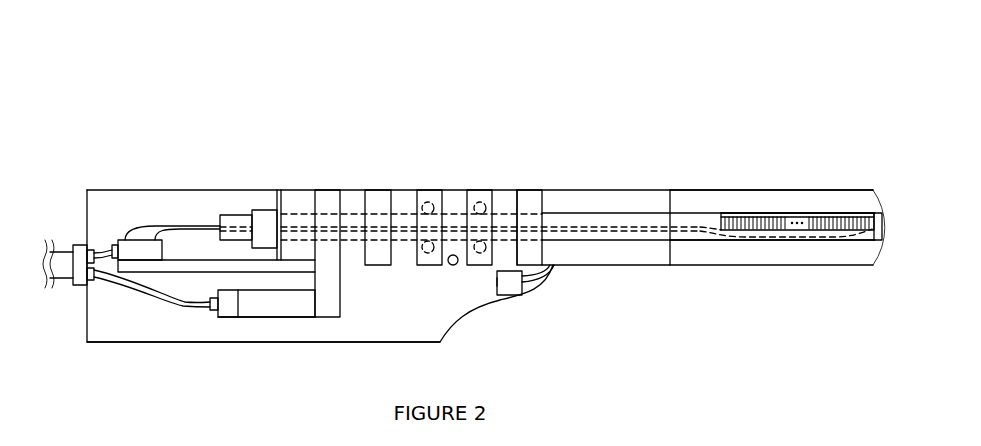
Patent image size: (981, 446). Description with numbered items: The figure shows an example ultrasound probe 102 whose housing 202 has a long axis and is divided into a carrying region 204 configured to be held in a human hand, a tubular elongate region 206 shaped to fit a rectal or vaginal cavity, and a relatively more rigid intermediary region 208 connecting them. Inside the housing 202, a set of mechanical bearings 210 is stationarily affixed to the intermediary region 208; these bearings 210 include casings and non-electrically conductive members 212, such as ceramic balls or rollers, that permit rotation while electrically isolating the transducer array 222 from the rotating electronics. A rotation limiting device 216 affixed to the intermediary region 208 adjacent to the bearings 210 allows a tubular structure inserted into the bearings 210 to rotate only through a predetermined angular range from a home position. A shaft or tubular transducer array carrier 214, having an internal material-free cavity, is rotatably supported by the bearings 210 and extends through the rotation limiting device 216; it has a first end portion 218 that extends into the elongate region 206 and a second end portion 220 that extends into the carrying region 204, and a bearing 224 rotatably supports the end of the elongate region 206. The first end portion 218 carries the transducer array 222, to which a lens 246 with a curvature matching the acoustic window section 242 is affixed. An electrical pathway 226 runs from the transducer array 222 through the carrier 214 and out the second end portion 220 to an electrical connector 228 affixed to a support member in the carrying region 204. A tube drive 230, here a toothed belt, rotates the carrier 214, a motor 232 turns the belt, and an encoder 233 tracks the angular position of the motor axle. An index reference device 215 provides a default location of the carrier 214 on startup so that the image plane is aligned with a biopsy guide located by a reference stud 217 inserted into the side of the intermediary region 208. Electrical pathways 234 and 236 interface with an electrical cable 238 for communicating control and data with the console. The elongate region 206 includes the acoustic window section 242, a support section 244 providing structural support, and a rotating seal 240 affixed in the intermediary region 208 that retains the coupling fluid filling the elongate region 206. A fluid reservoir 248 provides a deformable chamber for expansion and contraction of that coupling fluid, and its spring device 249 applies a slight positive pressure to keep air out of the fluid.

The probe 102 is at (119, 38).
The housing 202 is at (123, 190).
The carrying region 204 is at (333, 126).
The tubular elongate region 206 is at (581, 140).
The intermediary region 208 is at (526, 176).
The mechanical bearings 210 is at (485, 190).
The non-electrically conductive members 212 is at (480, 201).
The tubular transducer array carrier 214 is at (842, 242).
The index reference device 215 is at (260, 209).
The rotation limiting device 216 is at (372, 190).
The reference stud 217 is at (450, 264).
The first end portion 218 is at (594, 260).
The second end portion 220 is at (288, 193).
The transducer array 222 is at (800, 212).
The bearing 224 is at (880, 228).
The electrical pathway 226 is at (663, 234).
The electrical connector 228 is at (163, 250).
The tube drive 230 is at (327, 318).
The motor 232 is at (246, 290).
The encoder 233 is at (228, 317).
The electrical pathway 234 is at (99, 252).
The electrical pathway 236 is at (145, 298).
The electrical outlet or cable 238 is at (70, 281).
The seal 240 is at (538, 190).
The acoustic window section 242 is at (687, 190).
The support section 244 is at (610, 190).
The lens 246 is at (733, 212).
The fluid reservoir 248 is at (517, 297).
The spring device 249 is at (490, 285).